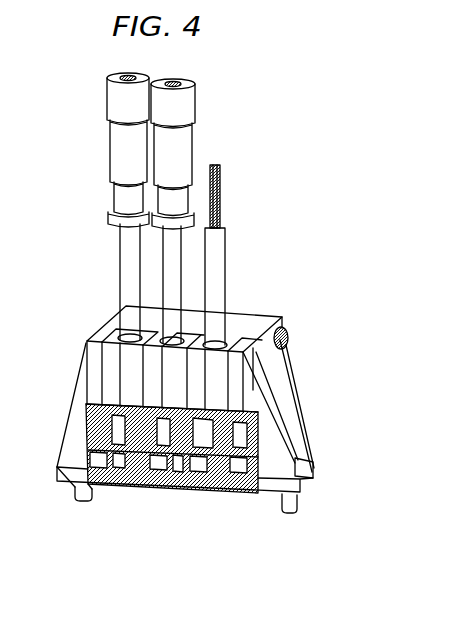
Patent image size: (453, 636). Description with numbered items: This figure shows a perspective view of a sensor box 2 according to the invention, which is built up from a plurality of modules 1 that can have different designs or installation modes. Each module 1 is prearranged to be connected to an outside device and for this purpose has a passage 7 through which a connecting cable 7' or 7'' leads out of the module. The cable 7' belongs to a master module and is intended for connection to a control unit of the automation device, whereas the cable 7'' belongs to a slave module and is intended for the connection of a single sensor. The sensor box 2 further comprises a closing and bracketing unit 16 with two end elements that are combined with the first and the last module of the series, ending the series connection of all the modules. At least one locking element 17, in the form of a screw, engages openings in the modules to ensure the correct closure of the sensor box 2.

The module 1 is at (270, 298).
The sensor box 2 is at (337, 300).
The passage 7 is at (106, 211).
The connecting cable 7' is at (243, 255).
The connecting cable 7'' is at (100, 206).
The closing and bracketing unit 16 is at (280, 467).
The locking element 17 is at (262, 472).